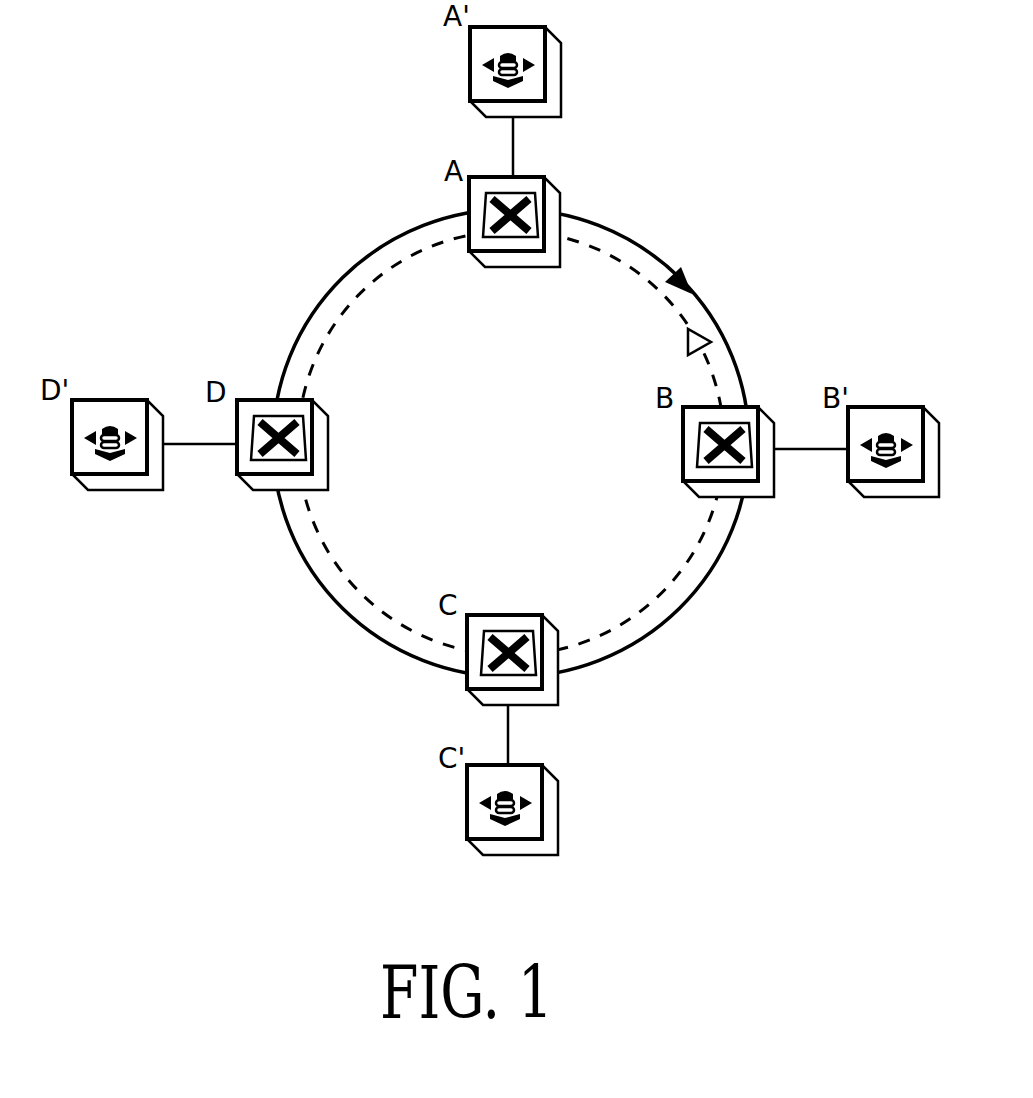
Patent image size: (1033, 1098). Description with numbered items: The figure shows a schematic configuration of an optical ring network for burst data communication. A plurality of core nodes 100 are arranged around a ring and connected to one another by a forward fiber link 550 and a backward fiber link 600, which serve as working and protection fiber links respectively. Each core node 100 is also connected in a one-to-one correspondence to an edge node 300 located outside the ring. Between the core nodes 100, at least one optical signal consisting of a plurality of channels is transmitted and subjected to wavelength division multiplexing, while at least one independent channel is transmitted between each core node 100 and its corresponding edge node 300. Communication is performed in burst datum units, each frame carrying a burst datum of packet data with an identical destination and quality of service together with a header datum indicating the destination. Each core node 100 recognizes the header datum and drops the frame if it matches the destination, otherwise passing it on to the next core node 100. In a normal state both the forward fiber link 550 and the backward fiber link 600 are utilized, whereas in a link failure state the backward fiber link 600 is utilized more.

The core node 100 is at (558, 202).
The edge node 300 is at (553, 72).
The forward fiber link 550 is at (667, 263).
The backward fiber link 600 is at (640, 282).